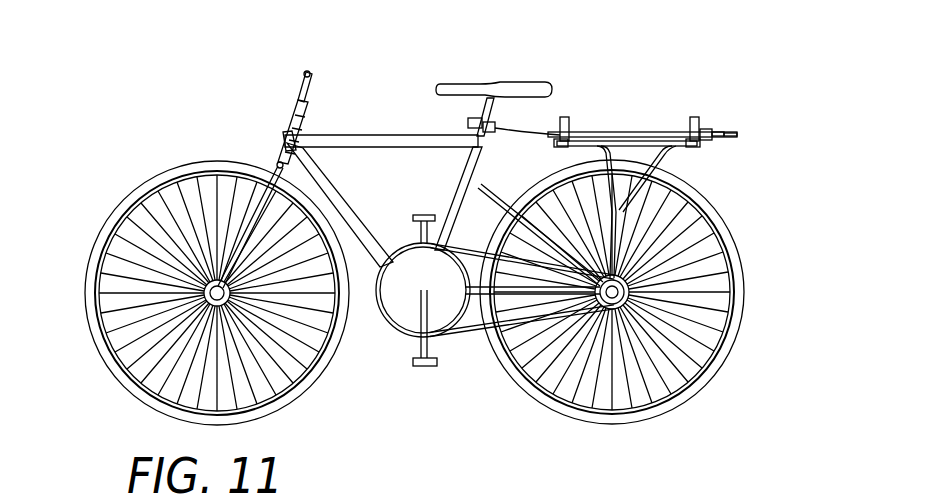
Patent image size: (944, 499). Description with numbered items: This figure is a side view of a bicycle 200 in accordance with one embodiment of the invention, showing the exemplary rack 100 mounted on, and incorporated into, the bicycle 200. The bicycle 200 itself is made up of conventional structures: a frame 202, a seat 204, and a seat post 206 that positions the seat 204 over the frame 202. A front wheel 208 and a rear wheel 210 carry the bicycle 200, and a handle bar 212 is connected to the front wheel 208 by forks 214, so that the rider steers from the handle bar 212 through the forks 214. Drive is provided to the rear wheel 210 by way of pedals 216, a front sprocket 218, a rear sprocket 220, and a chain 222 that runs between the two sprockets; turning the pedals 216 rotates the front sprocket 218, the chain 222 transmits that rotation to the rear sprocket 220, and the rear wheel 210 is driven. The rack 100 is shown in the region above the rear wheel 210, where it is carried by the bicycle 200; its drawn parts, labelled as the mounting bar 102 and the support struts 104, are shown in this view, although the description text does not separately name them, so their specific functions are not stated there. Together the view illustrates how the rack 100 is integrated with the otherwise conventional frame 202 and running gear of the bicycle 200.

The rack 100 is at (706, 94).
The mounting bar 102 is at (606, 131).
The support struts 104 is at (665, 158).
The bicycle 200 is at (200, 45).
The frame 202 is at (334, 136).
The seat 204 is at (526, 82).
The seat post 206 is at (482, 112).
The front wheel 208 is at (158, 173).
The rear wheel 210 is at (713, 210).
The handle bar 212 is at (311, 72).
The forks 214 is at (242, 178).
The pedals 216 is at (425, 370).
The front sprocket 218 is at (388, 318).
The rear sprocket 220 is at (630, 292).
The chain 222 is at (460, 338).